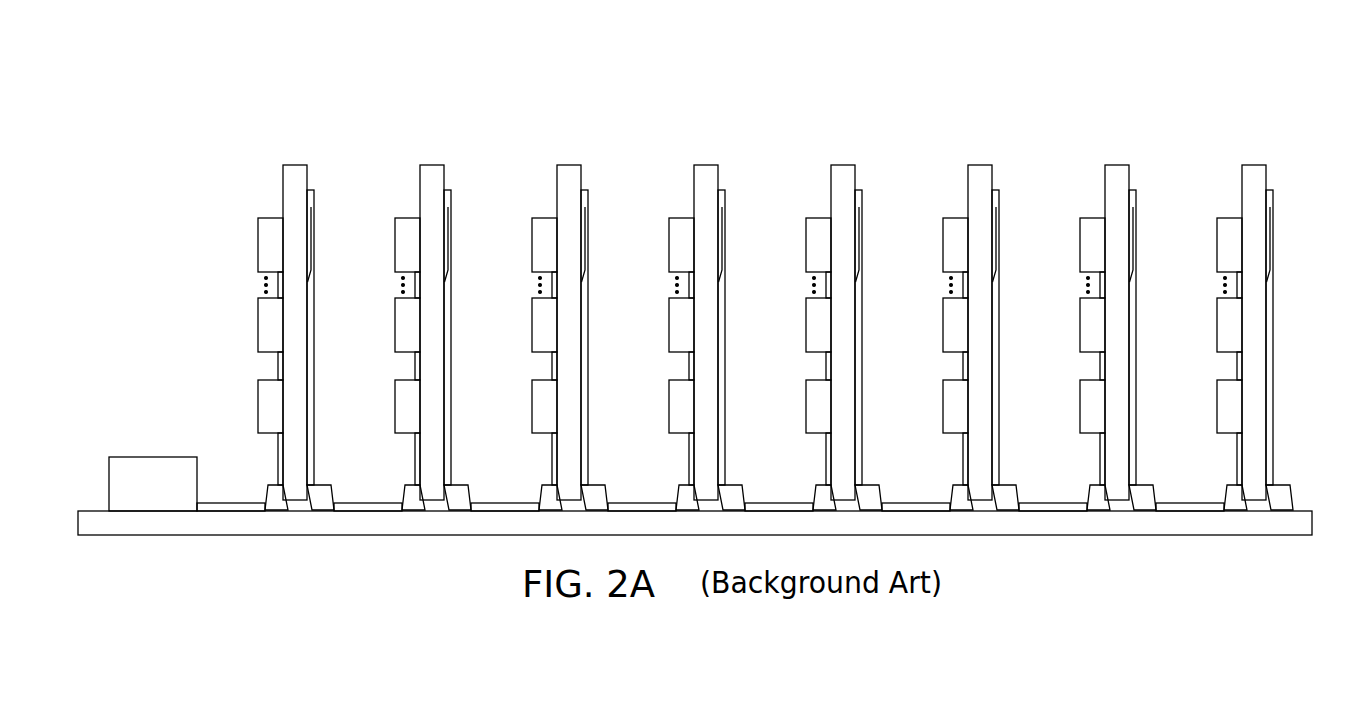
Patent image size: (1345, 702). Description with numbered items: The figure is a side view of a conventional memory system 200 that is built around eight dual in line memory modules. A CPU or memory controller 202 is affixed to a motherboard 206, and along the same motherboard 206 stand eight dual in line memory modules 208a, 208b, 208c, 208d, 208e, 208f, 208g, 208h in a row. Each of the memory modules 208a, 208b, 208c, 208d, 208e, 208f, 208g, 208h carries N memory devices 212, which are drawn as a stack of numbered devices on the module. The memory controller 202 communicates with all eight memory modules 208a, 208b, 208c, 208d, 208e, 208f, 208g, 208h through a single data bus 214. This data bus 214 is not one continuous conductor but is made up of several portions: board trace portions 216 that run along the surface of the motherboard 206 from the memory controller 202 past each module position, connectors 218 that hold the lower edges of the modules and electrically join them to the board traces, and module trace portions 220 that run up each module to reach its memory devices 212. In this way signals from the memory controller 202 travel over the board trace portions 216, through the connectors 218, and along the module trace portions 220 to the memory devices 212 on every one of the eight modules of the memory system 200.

The memory system 200 is at (180, 103).
The memory controller 202 is at (146, 456).
The motherboard 206 is at (313, 537).
The dual in line memory module 208a is at (295, 162).
The dual in line memory module 208b is at (464, 301).
The dual in line memory module 208c is at (600, 301).
The dual in line memory module 208d is at (738, 301).
The dual in line memory module 208e is at (875, 301).
The dual in line memory module 208f is at (1010, 301).
The dual in line memory module 208g is at (1149, 301).
The dual in line memory module 208h is at (1286, 301).
The memory devices 212 is at (258, 248).
The data bus 214 is at (217, 505).
The board trace portions 216 is at (225, 503).
The connectors 218 is at (321, 485).
The module trace portions 220 is at (278, 367).